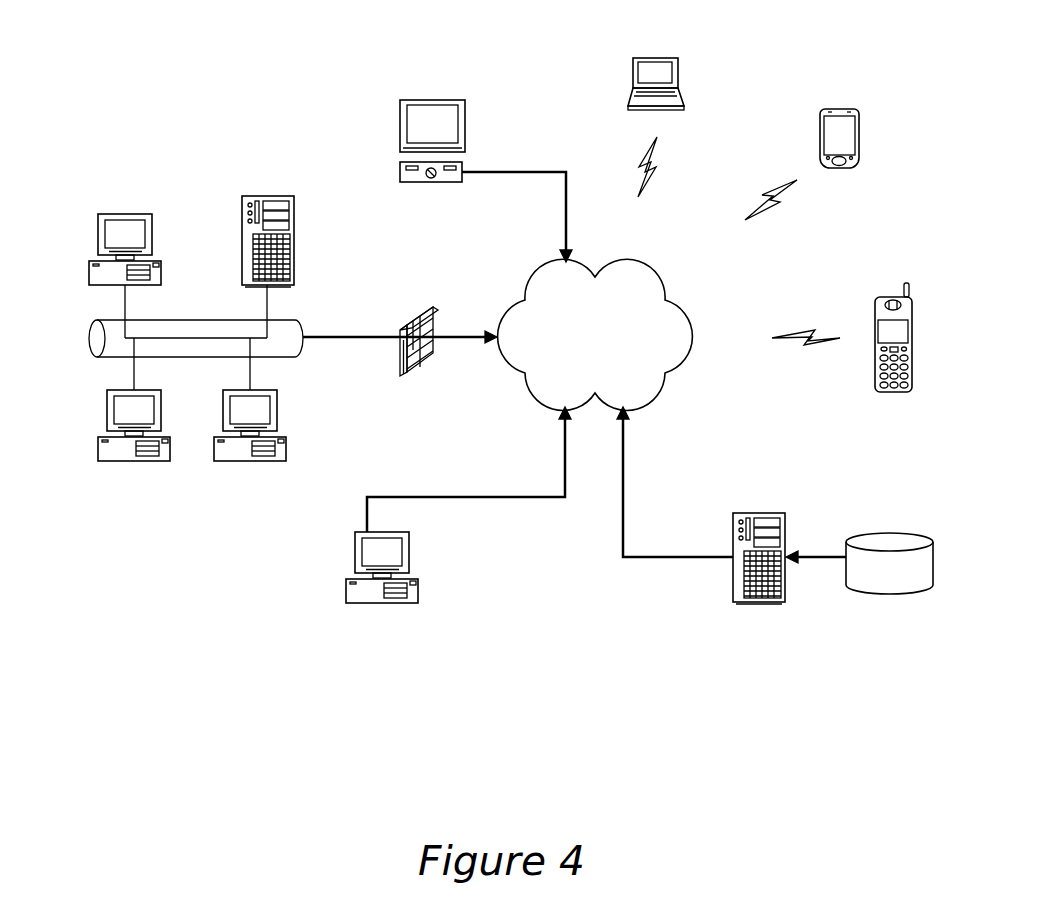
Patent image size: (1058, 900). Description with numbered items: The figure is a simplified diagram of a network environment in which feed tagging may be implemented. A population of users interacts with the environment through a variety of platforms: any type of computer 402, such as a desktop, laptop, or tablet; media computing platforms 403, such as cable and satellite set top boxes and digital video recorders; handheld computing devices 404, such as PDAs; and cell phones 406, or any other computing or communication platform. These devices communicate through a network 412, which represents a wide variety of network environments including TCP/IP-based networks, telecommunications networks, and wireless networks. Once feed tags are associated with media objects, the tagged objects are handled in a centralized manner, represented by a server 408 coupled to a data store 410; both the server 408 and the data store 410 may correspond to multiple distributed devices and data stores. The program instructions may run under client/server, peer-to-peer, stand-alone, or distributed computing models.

The computer 402 is at (98, 240).
The media computing platform 403 is at (400, 168).
The handheld computing device 404 is at (825, 110).
The cell phone 406 is at (878, 300).
The server 408 is at (745, 515).
The data store 410 is at (886, 531).
The network 412 is at (537, 275).